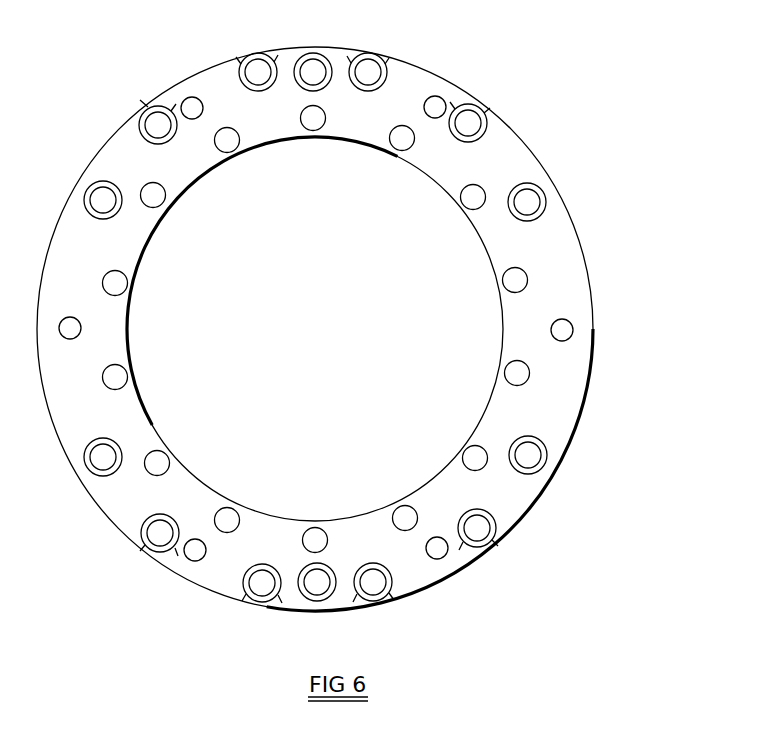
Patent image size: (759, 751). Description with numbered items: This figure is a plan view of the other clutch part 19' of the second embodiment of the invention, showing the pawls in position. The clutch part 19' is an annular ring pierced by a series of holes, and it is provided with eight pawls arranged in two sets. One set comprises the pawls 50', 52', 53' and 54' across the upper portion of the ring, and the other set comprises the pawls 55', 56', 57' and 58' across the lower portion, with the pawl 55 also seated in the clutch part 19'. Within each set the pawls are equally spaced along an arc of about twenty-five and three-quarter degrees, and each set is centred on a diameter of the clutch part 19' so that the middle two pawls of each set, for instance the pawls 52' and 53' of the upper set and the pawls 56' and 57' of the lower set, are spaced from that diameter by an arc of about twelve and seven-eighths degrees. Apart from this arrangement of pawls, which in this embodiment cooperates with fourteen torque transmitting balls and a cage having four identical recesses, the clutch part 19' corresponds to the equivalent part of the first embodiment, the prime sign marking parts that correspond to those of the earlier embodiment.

The clutch part 19' is at (337, 329).
The pawl 50' is at (191, 148).
The pawl 52' is at (270, 113).
The pawl 53' is at (368, 114).
The pawl 54' is at (448, 156).
The pawl 55 is at (562, 202).
The pawl 55' is at (498, 545).
The pawl 56' is at (387, 607).
The pawl 57' is at (247, 600).
The pawl 58' is at (136, 546).